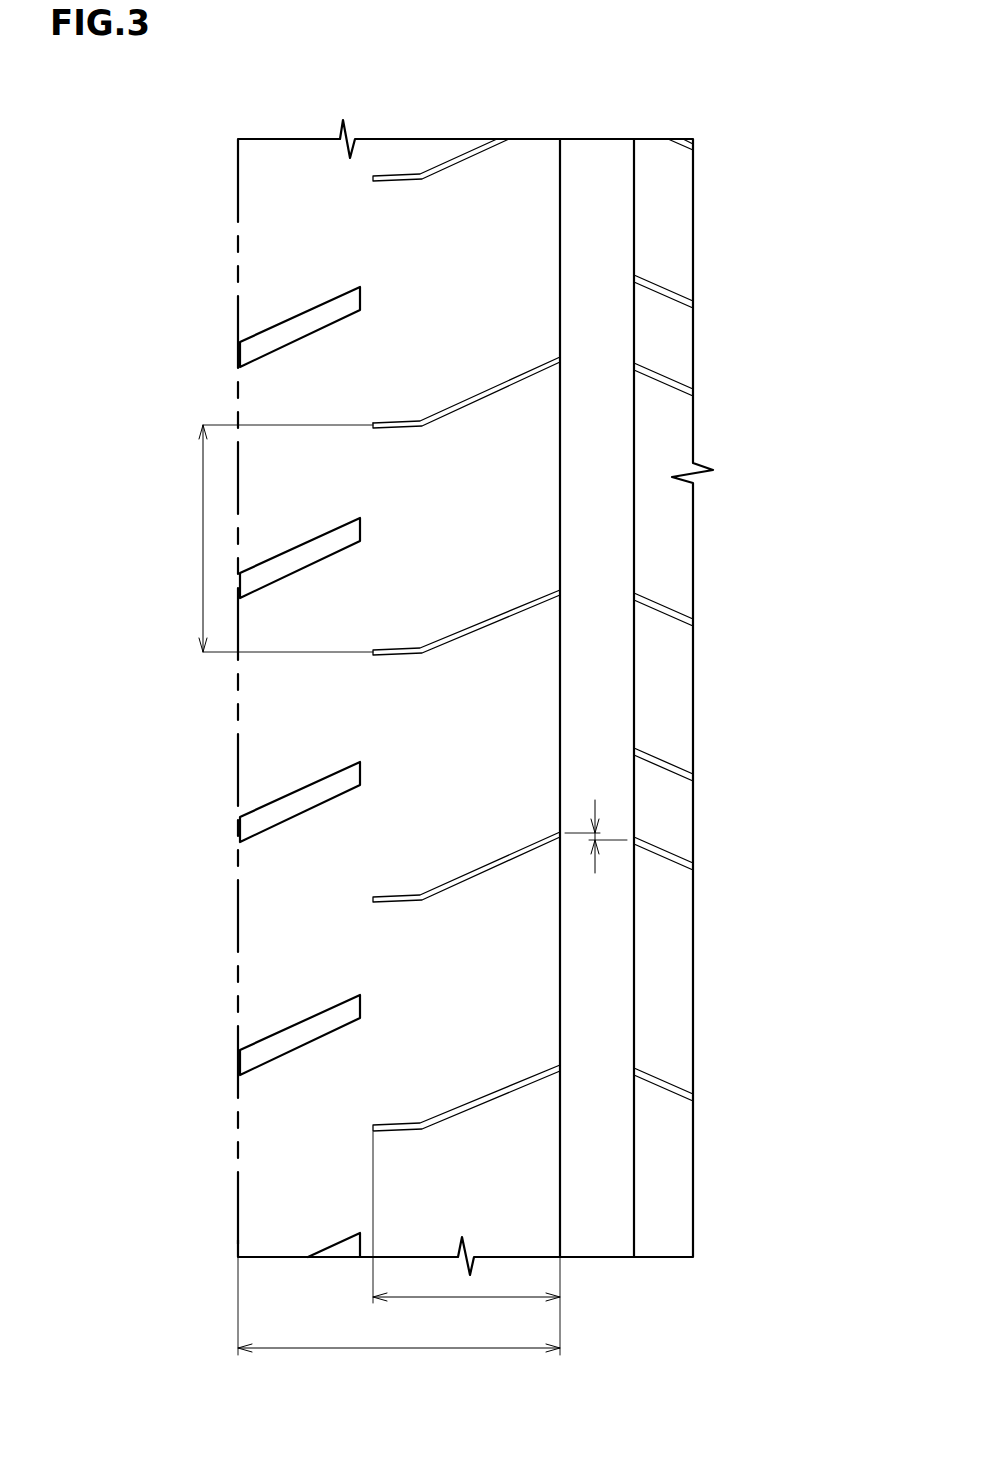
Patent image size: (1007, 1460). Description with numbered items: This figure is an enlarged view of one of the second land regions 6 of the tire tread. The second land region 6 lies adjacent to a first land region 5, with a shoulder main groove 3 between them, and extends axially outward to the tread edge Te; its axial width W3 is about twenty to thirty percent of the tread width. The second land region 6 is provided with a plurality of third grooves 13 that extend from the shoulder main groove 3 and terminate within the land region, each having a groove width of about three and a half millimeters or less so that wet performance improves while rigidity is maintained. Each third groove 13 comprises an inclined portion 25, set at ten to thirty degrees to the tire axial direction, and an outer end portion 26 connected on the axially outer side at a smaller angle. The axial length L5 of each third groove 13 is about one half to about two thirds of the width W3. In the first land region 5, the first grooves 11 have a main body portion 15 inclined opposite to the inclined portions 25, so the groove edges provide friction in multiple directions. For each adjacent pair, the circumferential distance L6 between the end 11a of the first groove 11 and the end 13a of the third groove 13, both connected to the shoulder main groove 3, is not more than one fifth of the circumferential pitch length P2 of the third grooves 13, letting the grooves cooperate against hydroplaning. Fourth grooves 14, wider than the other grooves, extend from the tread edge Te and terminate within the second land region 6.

The tread edge Te is at (238, 177).
The shoulder main groove 3 is at (593, 185).
The first land region 5 is at (662, 185).
The second land region 6 is at (400, 213).
The first groove 11 is at (663, 607).
The end of first groove 11a is at (633, 838).
The third groove 13 is at (327, 635).
The end of third groove 13a is at (562, 830).
The fourth groove 14 is at (305, 802).
The main body portion 15 is at (663, 378).
The inclined portion 25 is at (473, 393).
The outer end portion 26 is at (392, 421).
The pitch length P2 is at (267, 538).
The length of third groove L5 is at (466, 1232).
The distance L6 is at (602, 835).
The width of second land region W3 is at (399, 1320).